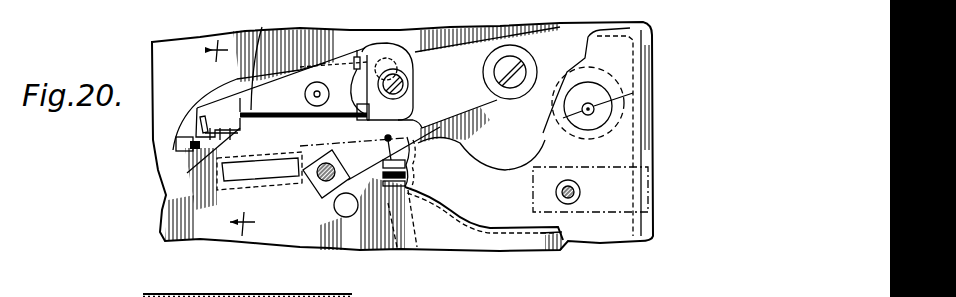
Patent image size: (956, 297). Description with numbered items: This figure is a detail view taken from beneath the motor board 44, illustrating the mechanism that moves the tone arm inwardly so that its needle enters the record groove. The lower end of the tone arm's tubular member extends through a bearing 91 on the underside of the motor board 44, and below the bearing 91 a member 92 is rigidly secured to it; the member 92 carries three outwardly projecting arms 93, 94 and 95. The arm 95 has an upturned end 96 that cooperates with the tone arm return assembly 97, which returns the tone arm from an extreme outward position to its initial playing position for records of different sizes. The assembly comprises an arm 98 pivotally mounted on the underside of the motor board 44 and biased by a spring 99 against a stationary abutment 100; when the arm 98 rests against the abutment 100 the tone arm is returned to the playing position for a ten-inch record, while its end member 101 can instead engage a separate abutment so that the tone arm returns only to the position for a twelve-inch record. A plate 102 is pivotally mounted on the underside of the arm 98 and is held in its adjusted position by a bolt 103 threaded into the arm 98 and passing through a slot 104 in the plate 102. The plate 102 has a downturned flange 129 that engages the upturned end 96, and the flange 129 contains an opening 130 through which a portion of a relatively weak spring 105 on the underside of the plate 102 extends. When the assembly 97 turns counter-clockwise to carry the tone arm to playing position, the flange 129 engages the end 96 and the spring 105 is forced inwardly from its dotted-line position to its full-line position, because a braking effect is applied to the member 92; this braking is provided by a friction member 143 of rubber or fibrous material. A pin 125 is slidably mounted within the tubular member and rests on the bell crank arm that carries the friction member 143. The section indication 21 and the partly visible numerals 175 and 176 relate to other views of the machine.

The section line 21 is at (215, 138).
The motor board 44 is at (190, 91).
The bearing 91 is at (655, 133).
The member 92 is at (520, 190).
The arm 93 is at (580, 232).
The arm 94 is at (616, 50).
The arm 95 is at (475, 162).
The upturned end 96 is at (210, 165).
The tone arm return assembly 97 is at (462, 73).
The arm 98 is at (434, 62).
The spring 99 is at (390, 182).
The stationary abutment 100 is at (340, 212).
The end member 101 is at (176, 136).
The plate 102 is at (287, 90).
The bolt 103 is at (400, 90).
The slot 104 is at (392, 58).
The spring 105 is at (245, 59).
The pin 125 is at (595, 106).
The downturned flange 129 is at (205, 150).
The opening 130 is at (223, 123).
The friction member 143 is at (580, 193).
The element 175 is at (128, 5).
The element 176 is at (68, 5).